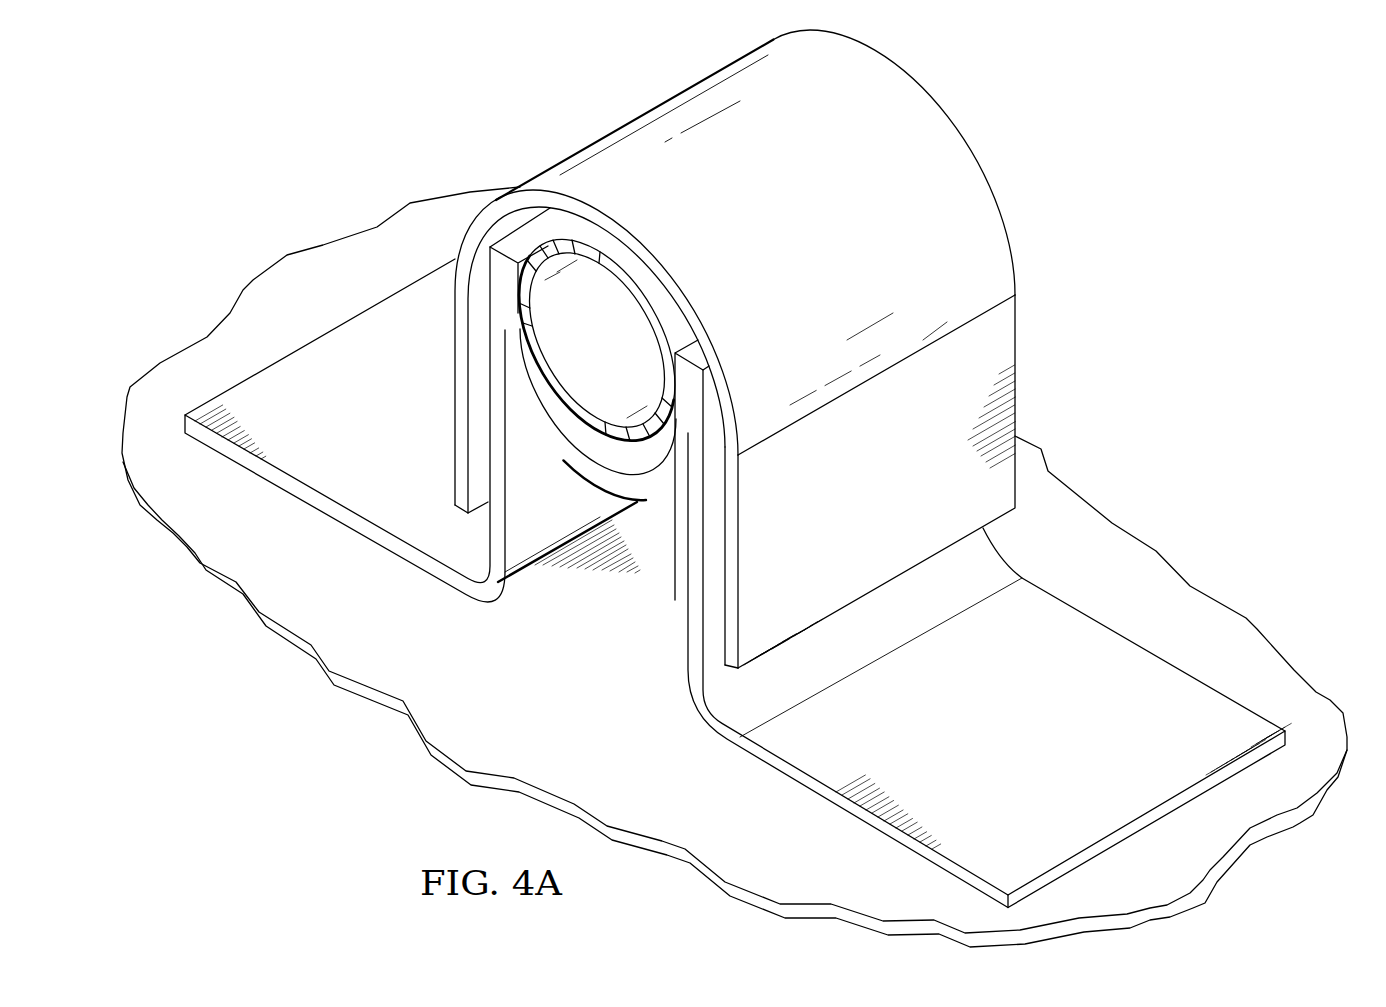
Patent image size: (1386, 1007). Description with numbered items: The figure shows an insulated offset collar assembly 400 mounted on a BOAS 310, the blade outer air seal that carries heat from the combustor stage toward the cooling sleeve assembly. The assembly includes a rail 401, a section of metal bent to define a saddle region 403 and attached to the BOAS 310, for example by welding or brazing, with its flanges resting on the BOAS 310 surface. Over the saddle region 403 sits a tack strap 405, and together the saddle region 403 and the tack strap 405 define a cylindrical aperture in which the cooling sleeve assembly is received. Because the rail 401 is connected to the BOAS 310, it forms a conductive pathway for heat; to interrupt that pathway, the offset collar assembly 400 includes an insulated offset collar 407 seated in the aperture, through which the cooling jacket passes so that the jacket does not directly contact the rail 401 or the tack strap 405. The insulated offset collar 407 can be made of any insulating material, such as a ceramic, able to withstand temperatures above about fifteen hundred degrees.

The BOAS 310 is at (581, 681).
The insulated offset collar assembly 400 is at (738, 469).
The rail 401 is at (1027, 735).
The saddle region 403 is at (556, 460).
The tack strap 405 is at (660, 108).
The insulated offset collar 407 is at (625, 444).